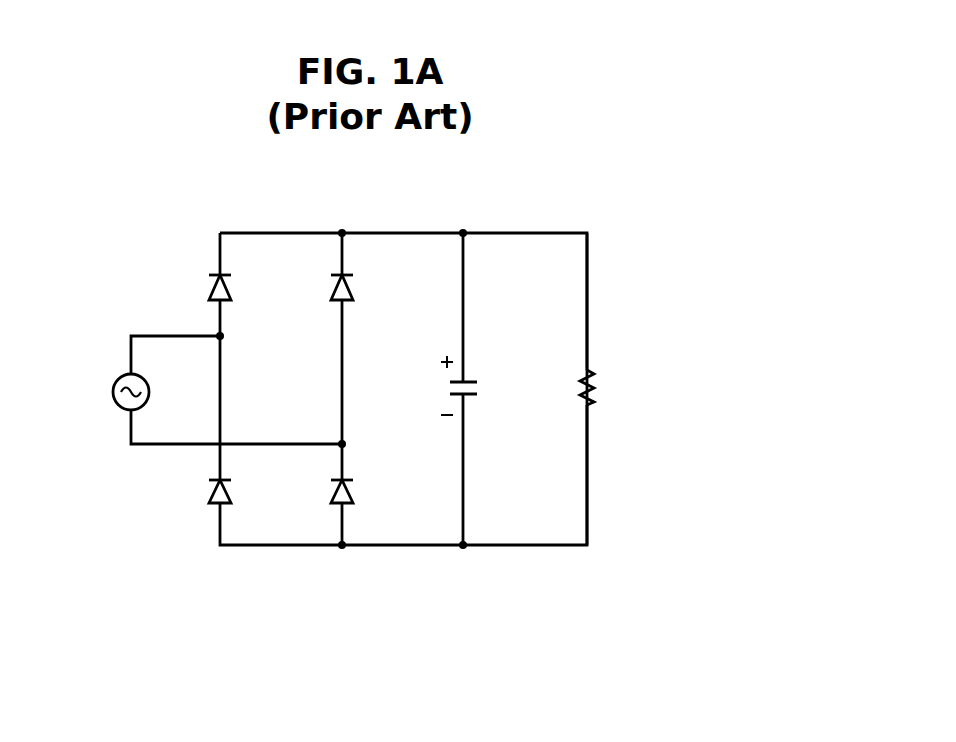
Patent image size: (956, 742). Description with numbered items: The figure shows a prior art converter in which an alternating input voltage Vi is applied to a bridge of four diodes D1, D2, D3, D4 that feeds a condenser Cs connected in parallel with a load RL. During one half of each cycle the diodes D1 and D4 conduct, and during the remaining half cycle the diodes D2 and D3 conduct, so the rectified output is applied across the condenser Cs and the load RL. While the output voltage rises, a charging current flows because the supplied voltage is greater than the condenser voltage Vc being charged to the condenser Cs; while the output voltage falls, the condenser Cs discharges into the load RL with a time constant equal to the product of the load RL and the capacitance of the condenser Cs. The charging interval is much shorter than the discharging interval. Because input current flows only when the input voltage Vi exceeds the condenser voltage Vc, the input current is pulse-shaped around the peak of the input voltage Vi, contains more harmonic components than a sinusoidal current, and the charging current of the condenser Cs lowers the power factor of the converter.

The diode D1 is at (243, 289).
The diode D2 is at (365, 289).
The diode D3 is at (243, 494).
The diode D4 is at (365, 494).
The input voltage Vi is at (148, 390).
The condenser voltage Vc is at (432, 385).
The condenser Cs is at (482, 393).
The load RL is at (607, 388).